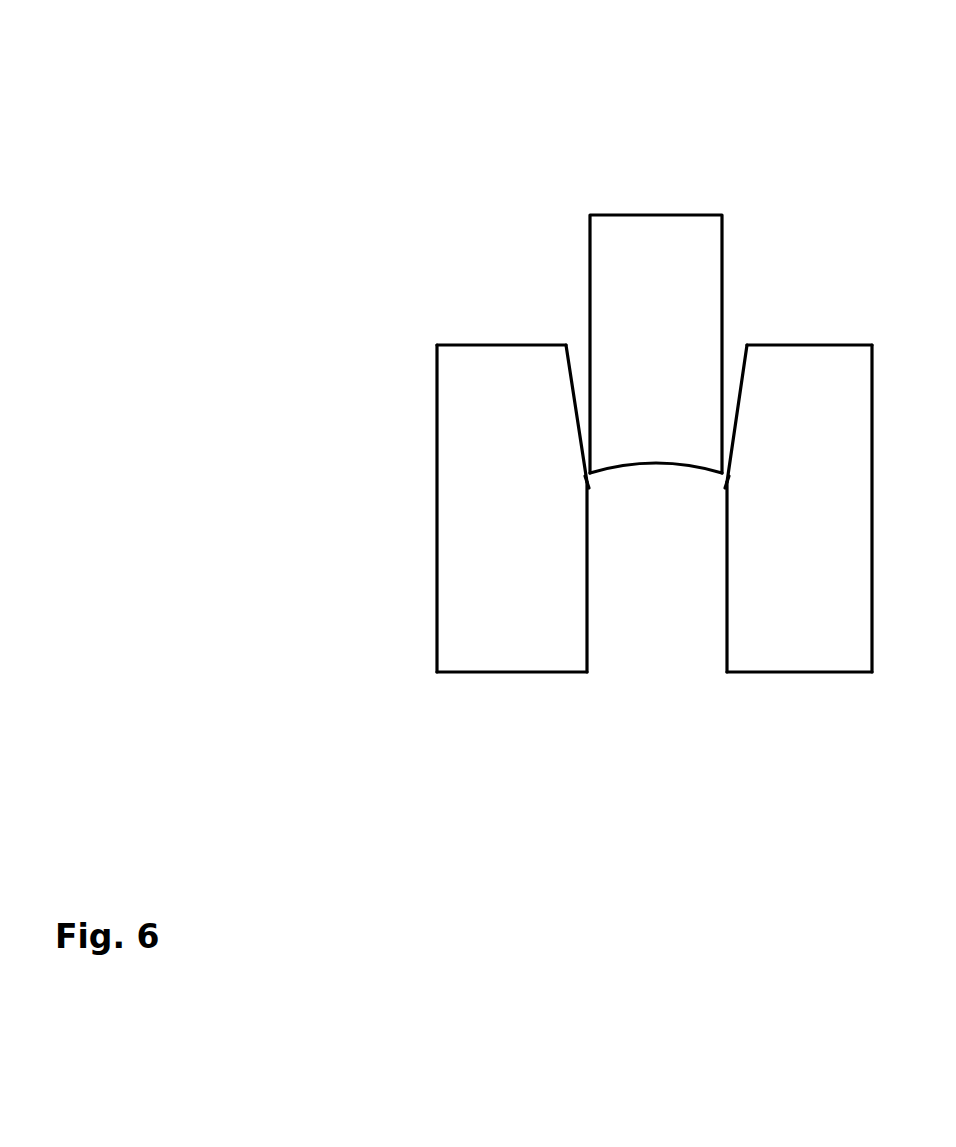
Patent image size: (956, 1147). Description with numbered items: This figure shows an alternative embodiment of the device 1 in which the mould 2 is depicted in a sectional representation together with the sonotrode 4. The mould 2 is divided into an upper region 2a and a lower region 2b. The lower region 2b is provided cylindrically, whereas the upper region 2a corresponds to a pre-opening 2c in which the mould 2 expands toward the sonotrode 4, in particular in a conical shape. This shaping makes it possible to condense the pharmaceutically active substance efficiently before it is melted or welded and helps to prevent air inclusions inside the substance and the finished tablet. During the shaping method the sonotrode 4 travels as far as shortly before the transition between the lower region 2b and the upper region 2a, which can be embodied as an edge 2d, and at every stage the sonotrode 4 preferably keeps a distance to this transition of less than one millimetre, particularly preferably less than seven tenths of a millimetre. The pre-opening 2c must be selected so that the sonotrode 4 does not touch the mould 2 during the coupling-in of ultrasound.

The device 1 is at (388, 108).
The mould 2 is at (470, 364).
The upper region 2a is at (423, 345).
The lower region 2b is at (423, 480).
The pre-opening 2c is at (584, 334).
The edge 2d is at (722, 482).
The sonotrode 4 is at (617, 242).